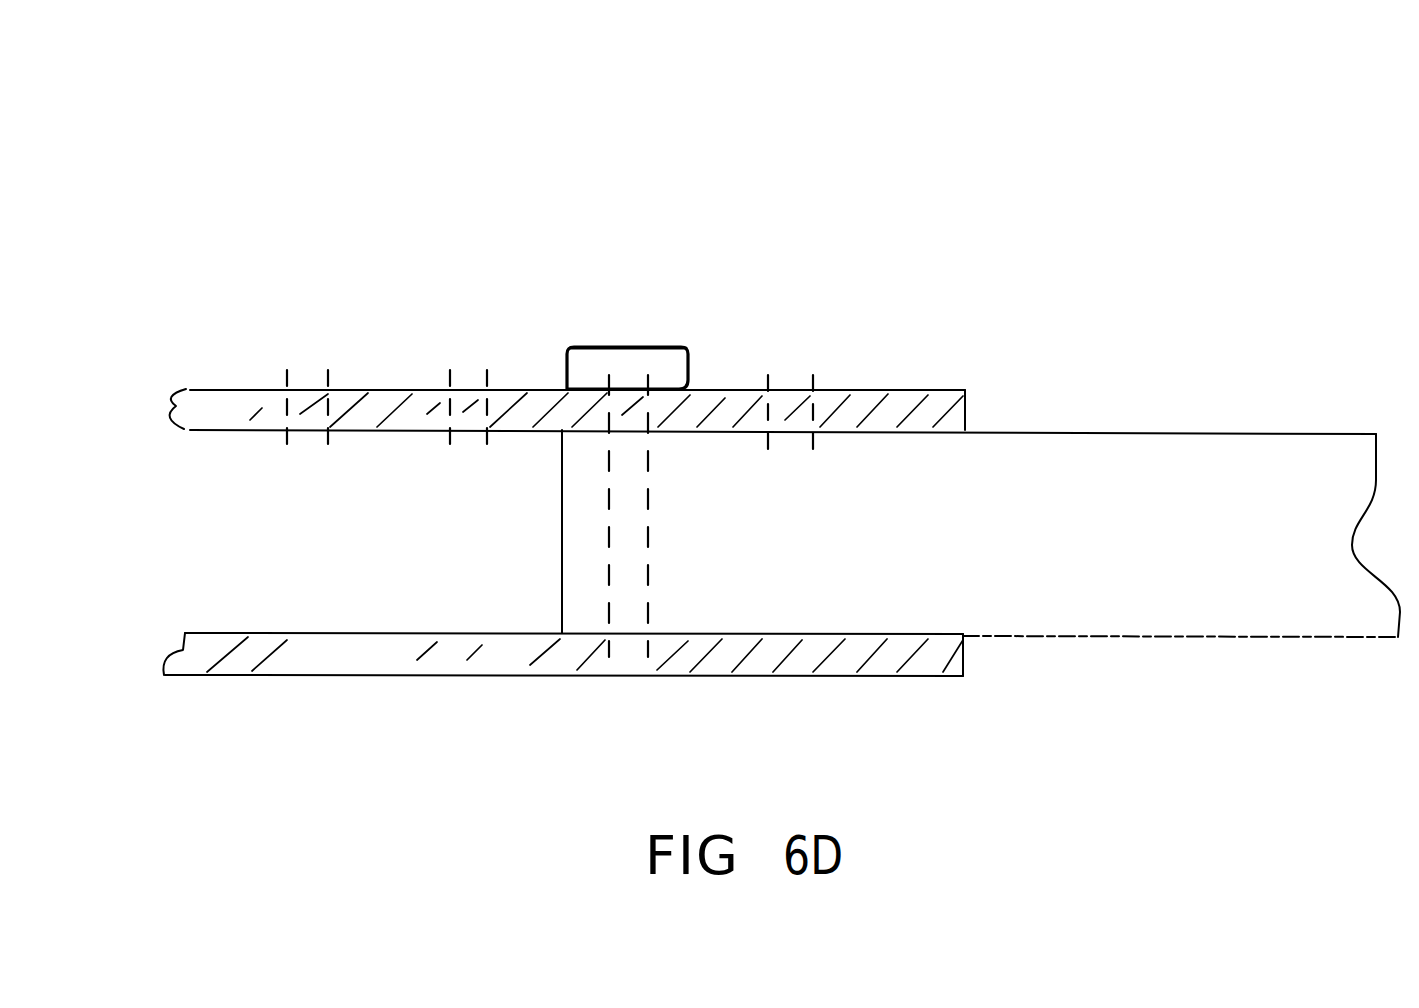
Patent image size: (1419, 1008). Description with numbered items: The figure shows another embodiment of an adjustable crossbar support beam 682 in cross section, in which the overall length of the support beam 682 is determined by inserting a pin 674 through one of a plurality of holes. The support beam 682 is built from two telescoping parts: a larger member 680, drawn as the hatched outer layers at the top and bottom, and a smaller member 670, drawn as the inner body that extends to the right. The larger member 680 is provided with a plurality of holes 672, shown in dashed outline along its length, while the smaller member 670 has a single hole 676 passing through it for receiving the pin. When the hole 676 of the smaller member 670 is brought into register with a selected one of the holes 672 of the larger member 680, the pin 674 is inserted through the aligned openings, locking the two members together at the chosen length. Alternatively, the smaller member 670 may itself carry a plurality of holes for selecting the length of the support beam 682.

The smaller member 670 is at (1133, 433).
The holes 672 is at (305, 376).
The pin 674 is at (590, 347).
The hole 676 is at (652, 528).
The larger member 680 is at (905, 390).
The adjustable crossbar support beam 682 is at (857, 207).